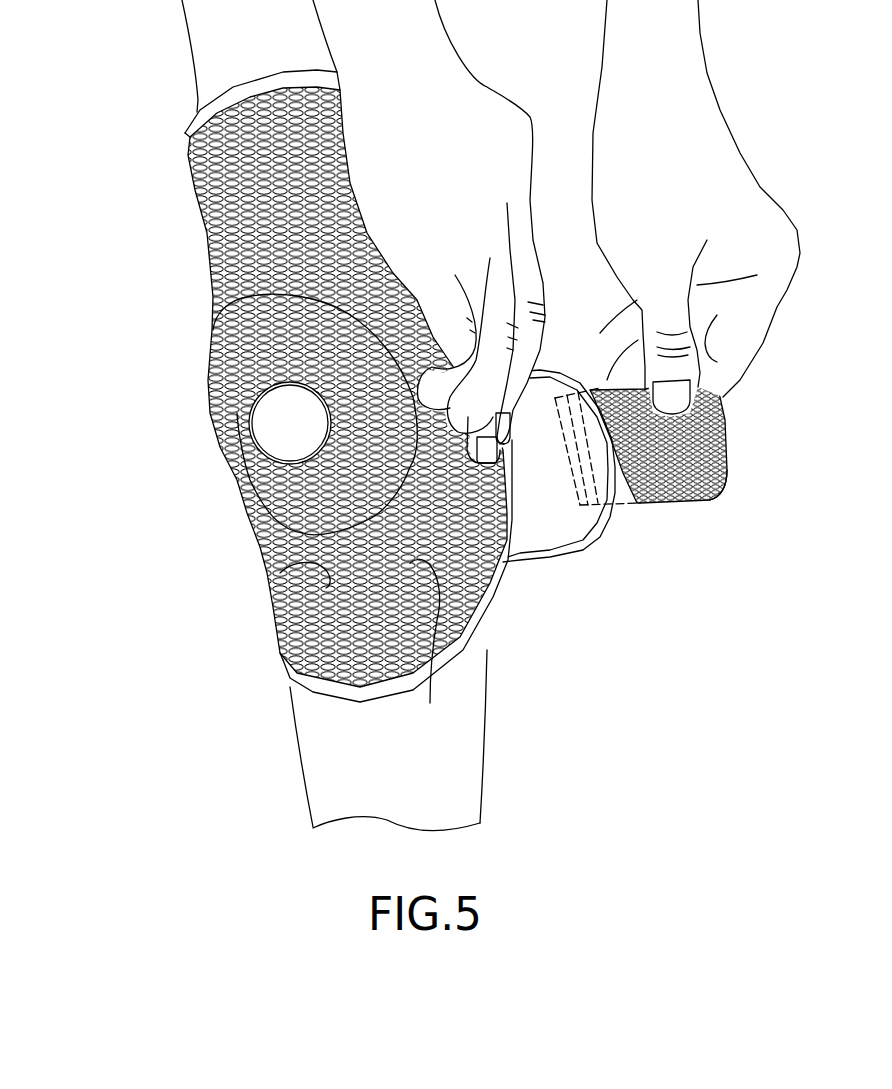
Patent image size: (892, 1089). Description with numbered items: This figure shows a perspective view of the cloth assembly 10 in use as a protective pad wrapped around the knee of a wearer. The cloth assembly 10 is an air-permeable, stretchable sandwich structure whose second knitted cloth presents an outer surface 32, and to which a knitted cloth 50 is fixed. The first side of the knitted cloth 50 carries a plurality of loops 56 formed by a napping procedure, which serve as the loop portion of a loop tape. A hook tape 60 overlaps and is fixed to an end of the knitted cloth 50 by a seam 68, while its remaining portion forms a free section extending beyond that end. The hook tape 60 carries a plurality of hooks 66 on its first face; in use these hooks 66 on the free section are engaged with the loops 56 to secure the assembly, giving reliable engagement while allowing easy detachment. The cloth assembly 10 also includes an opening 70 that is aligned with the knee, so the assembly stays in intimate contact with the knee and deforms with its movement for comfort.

The cloth assembly 10 is at (423, 402).
The outer surface 32 is at (573, 533).
The knitted cloth 50 is at (332, 402).
The loops 56 is at (280, 573).
The hook tape 60 is at (673, 479).
The hooks 66 is at (700, 497).
The seam 68 is at (597, 487).
The opening 70 is at (252, 440).